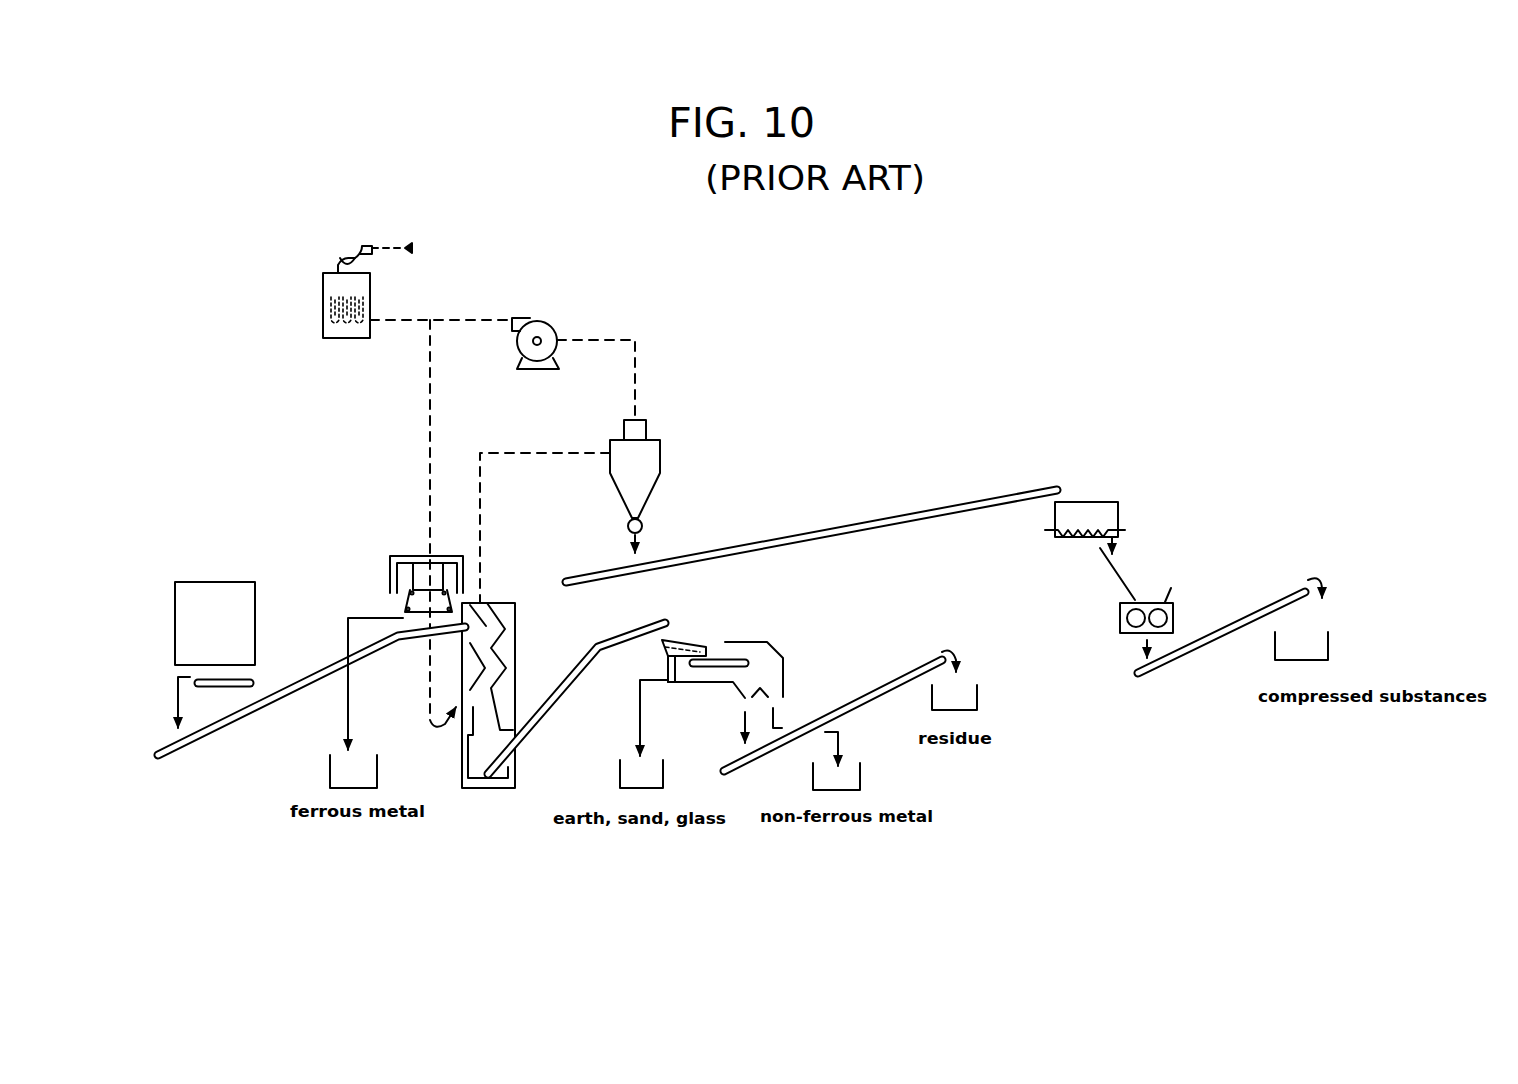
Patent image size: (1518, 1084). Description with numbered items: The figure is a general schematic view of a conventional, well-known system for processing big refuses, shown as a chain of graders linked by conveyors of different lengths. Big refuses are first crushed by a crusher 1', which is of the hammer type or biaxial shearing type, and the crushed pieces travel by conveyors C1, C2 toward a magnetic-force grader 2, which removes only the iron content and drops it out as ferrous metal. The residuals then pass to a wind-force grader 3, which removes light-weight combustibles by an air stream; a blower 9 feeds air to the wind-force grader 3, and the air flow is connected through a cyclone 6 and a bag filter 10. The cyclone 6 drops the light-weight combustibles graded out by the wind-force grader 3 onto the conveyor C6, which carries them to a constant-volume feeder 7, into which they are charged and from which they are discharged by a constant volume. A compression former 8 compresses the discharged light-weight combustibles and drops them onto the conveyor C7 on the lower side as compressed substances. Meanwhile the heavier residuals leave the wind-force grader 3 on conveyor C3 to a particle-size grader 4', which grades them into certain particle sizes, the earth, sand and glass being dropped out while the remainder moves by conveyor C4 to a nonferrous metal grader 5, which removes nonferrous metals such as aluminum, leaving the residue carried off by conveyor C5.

The bag filter 10 is at (320, 285).
The blower 9 is at (547, 320).
The cyclone 6 is at (665, 462).
The crusher 1' is at (227, 619).
The magnetic-force grader 2 is at (411, 553).
The wind-force grader 3 is at (521, 638).
The particle-size grader 4' is at (692, 669).
The nonferrous metal grader 5 is at (780, 645).
The constant-volume feeder 7 is at (1105, 500).
The compression former 8 is at (1117, 618).
The conveyor C1 is at (222, 690).
The conveyor C2 is at (292, 690).
The conveyor C3 is at (546, 716).
The conveyor C4 is at (712, 672).
The conveyor C5 is at (862, 698).
The conveyor C6 is at (835, 520).
The conveyor C7 is at (1195, 650).